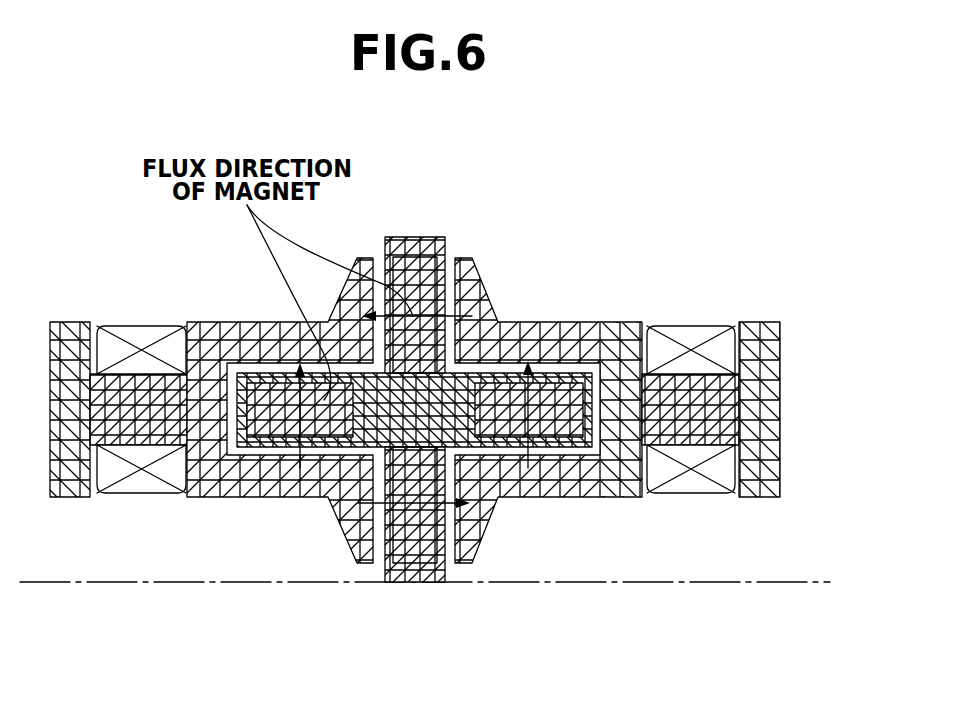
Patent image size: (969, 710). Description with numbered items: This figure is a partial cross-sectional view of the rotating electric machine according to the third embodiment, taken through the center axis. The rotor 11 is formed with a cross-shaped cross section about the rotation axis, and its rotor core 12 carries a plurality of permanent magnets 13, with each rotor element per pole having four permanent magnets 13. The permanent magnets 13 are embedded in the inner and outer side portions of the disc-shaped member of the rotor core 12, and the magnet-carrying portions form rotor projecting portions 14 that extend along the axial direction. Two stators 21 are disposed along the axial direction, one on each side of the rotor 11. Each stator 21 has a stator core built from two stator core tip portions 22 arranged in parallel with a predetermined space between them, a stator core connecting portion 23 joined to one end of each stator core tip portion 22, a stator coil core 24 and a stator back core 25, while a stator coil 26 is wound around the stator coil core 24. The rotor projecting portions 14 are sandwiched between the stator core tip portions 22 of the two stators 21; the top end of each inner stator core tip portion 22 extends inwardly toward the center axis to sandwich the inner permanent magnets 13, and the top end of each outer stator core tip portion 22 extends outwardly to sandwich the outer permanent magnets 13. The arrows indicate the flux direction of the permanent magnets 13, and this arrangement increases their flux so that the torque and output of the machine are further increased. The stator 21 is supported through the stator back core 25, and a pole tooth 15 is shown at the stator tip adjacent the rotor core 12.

The rotor 11 is at (370, 467).
The rotor core 12 is at (400, 403).
The permanent magnet 13 is at (407, 277).
The rotor projecting portion 14 is at (285, 450).
The pole tooth 15 is at (508, 368).
The stator 21 is at (797, 430).
The stator core tip portion 22 is at (557, 345).
The stator core connecting portion 23 is at (613, 383).
The stator coil core 24 is at (672, 405).
The stator back core 25 is at (760, 373).
The stator coil 26 is at (708, 470).